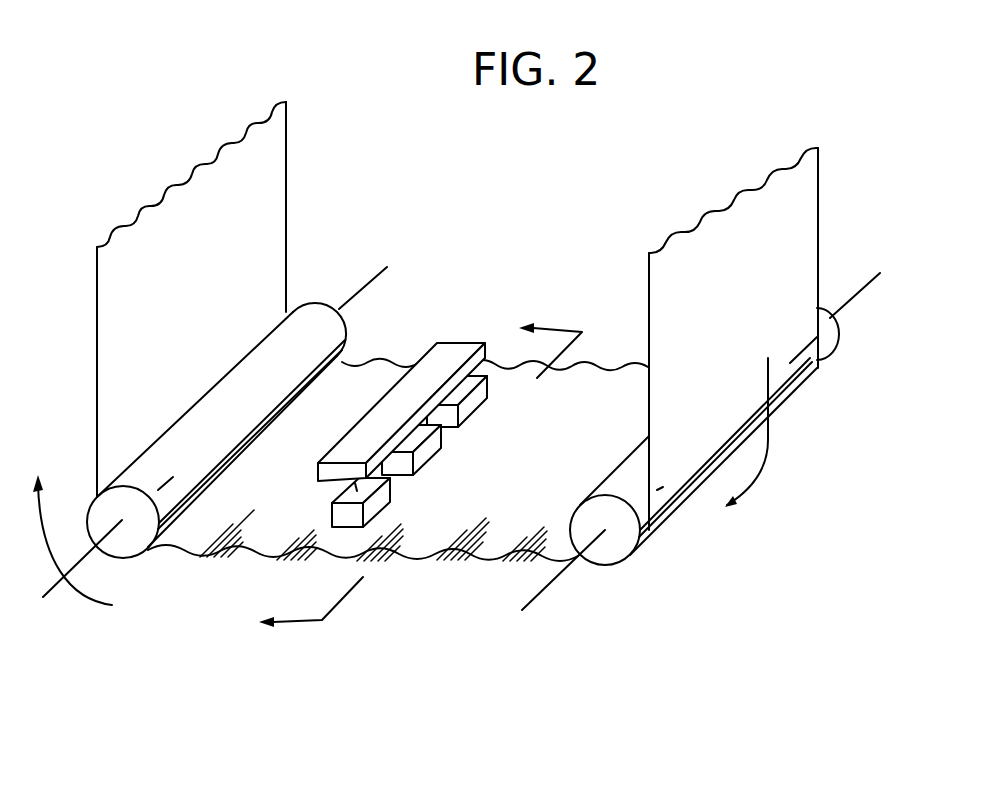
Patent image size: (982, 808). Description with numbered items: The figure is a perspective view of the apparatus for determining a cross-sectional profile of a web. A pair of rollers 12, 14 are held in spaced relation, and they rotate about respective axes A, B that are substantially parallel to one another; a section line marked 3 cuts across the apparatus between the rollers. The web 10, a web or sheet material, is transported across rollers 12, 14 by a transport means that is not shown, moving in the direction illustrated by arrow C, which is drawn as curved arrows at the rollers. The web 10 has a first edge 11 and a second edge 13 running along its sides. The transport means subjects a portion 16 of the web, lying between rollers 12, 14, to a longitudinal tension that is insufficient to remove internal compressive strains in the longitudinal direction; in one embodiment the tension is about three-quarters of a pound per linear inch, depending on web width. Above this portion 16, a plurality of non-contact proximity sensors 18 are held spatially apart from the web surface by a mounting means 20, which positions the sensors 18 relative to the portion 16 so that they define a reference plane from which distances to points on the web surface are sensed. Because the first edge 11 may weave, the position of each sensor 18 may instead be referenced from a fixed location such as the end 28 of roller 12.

The web 10 is at (773, 195).
The first edge 11 is at (97, 322).
The roller 12 is at (251, 464).
The second edge 13 is at (287, 198).
The roller 14 is at (610, 551).
The portion of the web 16 is at (433, 522).
The non-contact proximity sensors 18 is at (470, 410).
The mounting means 20 is at (343, 450).
The end of roller 28 is at (123, 558).
The axis A is at (387, 267).
The axis B is at (858, 292).
The arrow C is at (88, 597).
The section line 3- 3 is at (417, 483).